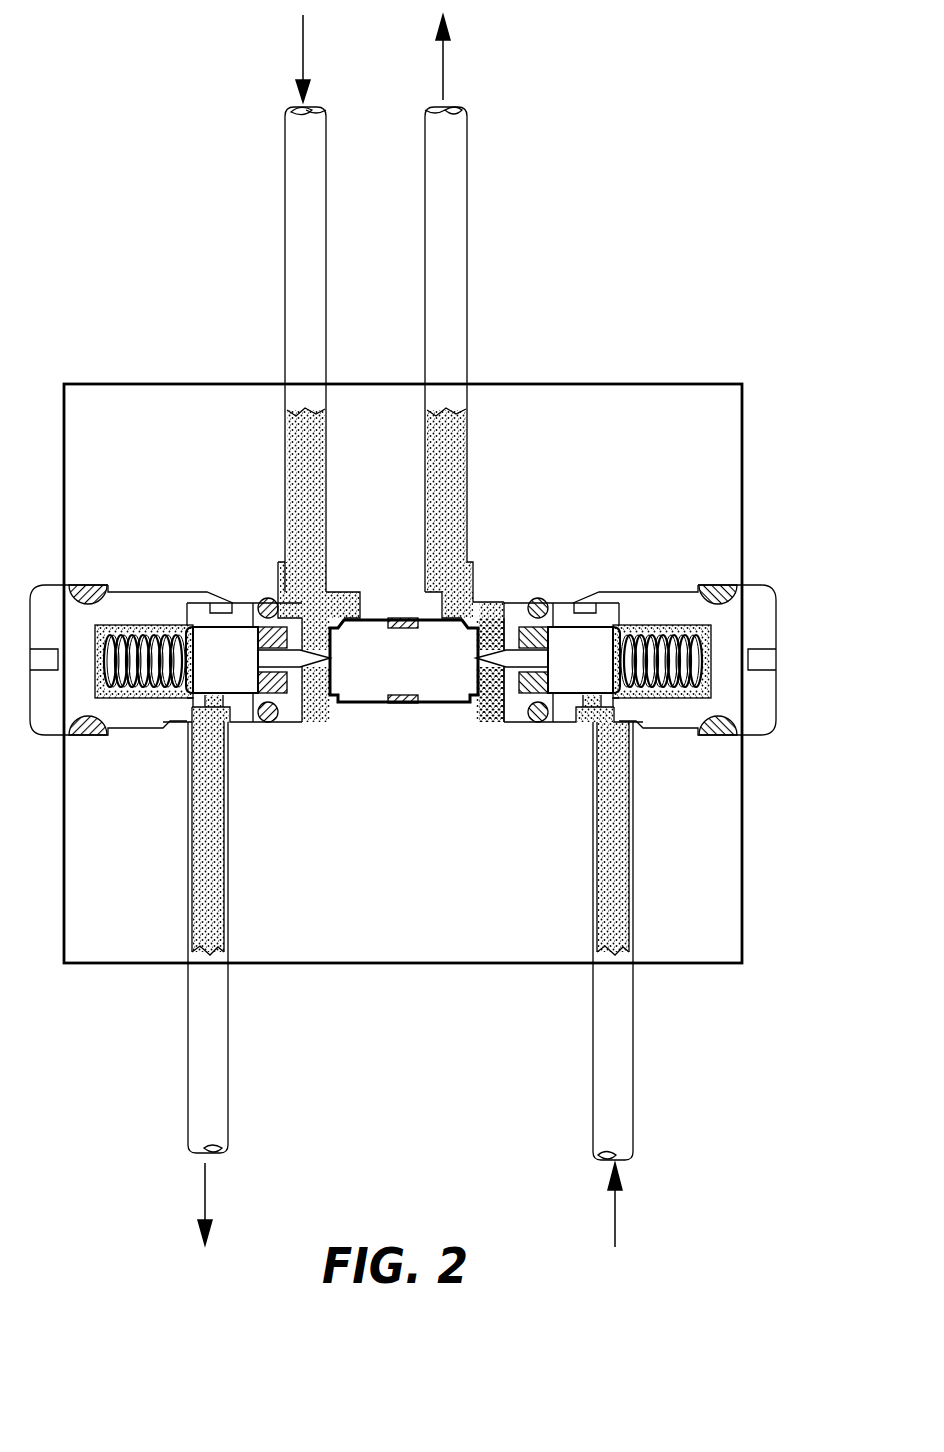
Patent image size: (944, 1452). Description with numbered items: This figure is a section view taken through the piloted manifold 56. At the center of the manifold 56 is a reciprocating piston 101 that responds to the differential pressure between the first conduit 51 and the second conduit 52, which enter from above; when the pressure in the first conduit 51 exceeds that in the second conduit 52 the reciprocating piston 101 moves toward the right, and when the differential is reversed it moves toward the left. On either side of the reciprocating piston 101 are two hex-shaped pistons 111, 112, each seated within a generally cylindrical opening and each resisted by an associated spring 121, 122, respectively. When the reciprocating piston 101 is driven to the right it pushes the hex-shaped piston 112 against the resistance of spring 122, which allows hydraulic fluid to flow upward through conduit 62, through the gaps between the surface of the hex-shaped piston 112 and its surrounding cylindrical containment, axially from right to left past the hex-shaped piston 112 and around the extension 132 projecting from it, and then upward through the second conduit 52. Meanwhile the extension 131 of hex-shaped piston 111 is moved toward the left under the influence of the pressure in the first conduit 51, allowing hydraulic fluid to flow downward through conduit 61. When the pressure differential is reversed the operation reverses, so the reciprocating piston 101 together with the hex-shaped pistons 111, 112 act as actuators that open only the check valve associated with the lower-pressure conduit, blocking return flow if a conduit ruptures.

The piloted manifold 56 is at (744, 450).
The first conduit 51 is at (290, 282).
The second conduit 52 is at (460, 298).
The conduit 61 is at (187, 1050).
The conduit 62 is at (633, 1050).
The reciprocating piston 101 is at (373, 683).
The hex-shaped piston 111 is at (243, 632).
The hex-shaped piston 112 is at (567, 632).
The spring 121 is at (138, 688).
The spring 122 is at (672, 703).
The extension 131 is at (295, 660).
The extension 132 is at (503, 658).